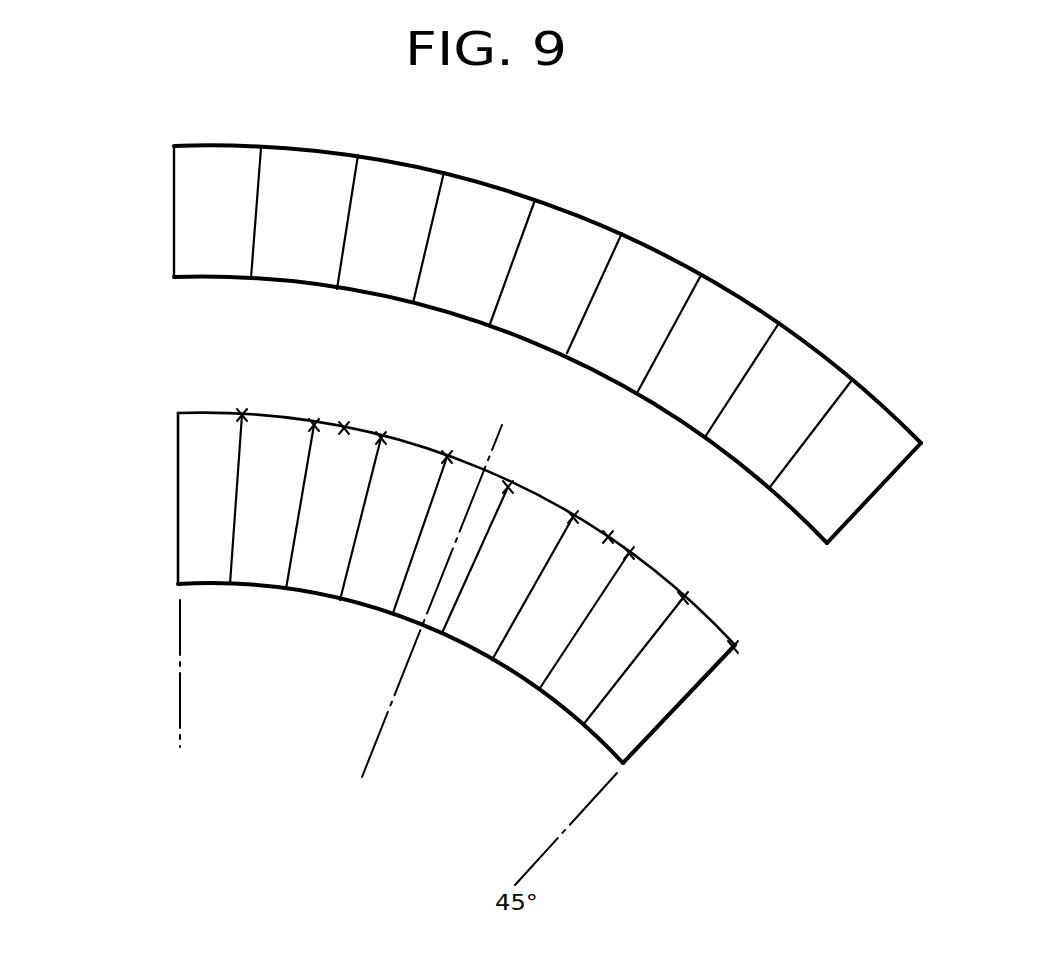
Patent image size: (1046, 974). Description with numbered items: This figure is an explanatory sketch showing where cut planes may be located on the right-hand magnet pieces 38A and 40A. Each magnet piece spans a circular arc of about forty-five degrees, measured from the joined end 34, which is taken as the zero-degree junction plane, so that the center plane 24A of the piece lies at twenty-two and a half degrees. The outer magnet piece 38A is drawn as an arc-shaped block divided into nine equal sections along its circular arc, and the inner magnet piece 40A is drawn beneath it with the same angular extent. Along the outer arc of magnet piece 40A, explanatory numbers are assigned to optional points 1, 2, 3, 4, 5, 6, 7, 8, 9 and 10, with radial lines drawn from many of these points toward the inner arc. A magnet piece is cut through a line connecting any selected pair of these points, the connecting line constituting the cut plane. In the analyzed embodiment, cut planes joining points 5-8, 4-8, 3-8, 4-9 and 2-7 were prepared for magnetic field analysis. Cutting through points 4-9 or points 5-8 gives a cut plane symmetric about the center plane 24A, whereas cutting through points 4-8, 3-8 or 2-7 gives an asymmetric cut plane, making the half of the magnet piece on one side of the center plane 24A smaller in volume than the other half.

The magnet piece 38A is at (197, 217).
The magnet piece 40A is at (203, 518).
The joined end 34 is at (180, 724).
The center plane 24A is at (362, 777).
The point 1 is at (741, 634).
The point 2 is at (690, 585).
The point 3 is at (637, 541).
The point 4 is at (613, 521).
The point 5 is at (577, 501).
The point 6 is at (511, 471).
The point 7 is at (450, 444).
The point 8 is at (383, 422).
The point 9 is at (346, 413).
The point 10 is at (315, 410).